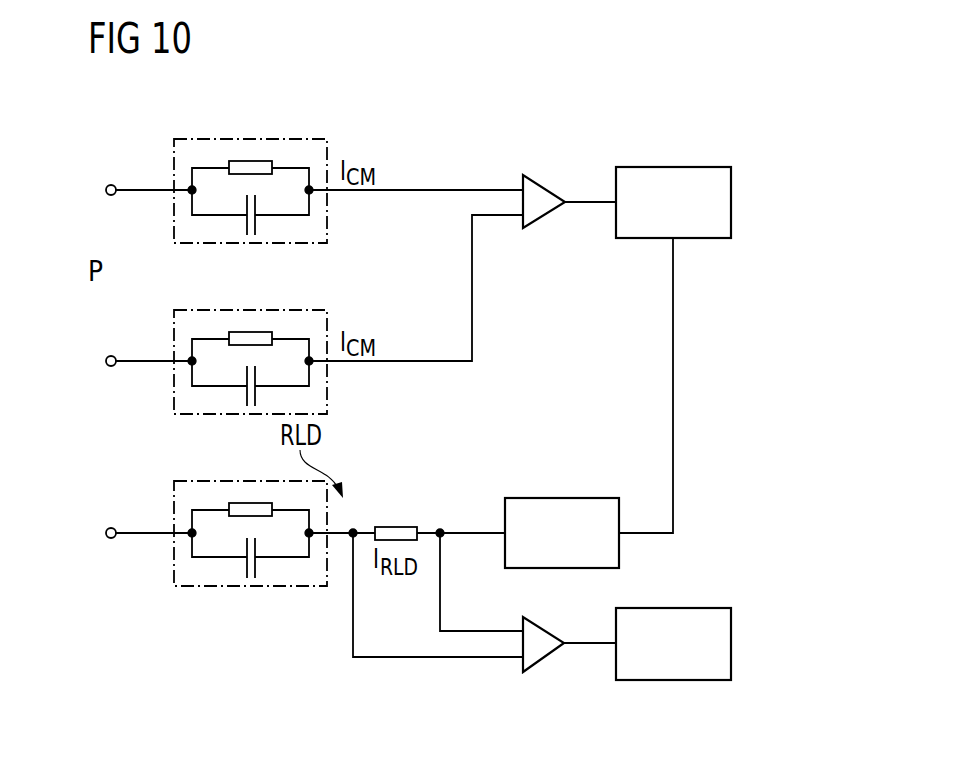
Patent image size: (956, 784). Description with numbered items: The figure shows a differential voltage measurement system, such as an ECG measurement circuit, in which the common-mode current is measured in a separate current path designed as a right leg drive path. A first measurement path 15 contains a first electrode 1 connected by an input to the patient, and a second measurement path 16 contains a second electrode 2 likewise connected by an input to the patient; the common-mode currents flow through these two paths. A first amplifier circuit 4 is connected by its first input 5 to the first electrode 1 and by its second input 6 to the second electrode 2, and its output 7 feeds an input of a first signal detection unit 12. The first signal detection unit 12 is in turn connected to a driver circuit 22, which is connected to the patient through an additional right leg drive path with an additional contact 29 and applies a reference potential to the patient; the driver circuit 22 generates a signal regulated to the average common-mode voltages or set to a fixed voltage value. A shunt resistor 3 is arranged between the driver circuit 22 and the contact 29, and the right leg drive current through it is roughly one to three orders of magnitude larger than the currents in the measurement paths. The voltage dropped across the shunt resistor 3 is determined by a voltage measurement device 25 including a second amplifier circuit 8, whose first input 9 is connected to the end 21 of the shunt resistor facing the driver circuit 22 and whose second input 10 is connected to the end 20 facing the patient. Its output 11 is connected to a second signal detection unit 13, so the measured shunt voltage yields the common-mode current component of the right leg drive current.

The first electrode 1 is at (263, 139).
The second electrode 2 is at (263, 310).
The additional contact 29 is at (264, 481).
The first measurement path 15 is at (143, 160).
The second measurement path 16 is at (141, 342).
The shunt resistor 3 is at (395, 526).
The first amplifier circuit 4 is at (548, 181).
The first input 5 is at (522, 181).
The second input 6 is at (523, 221).
The output 7 is at (563, 206).
The second amplifier circuit 8 is at (548, 623).
The first input 9 is at (522, 623).
The second input 10 is at (523, 661).
The output 11 is at (569, 648).
The first signal detection unit 12 is at (733, 201).
The second signal detection unit 13 is at (733, 644).
The end of the shunt resistor facing the patient 20 is at (354, 529).
The end of the shunt resistor facing the driver circuit 21 is at (441, 528).
The driver circuit 22 is at (560, 498).
The voltage measurement device 25 is at (563, 663).